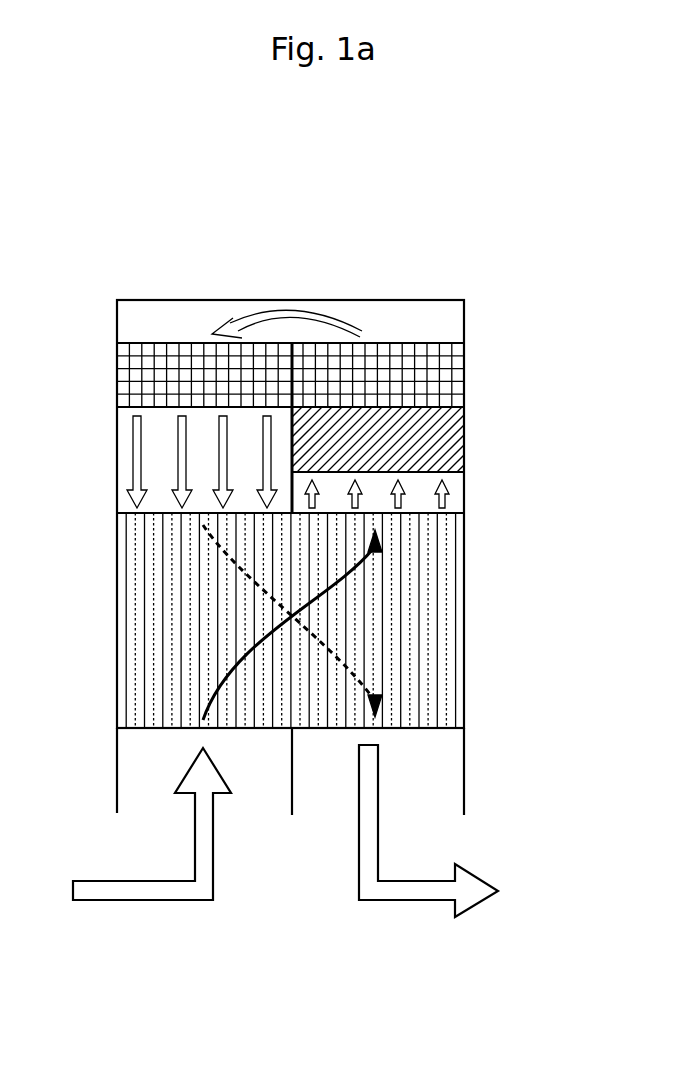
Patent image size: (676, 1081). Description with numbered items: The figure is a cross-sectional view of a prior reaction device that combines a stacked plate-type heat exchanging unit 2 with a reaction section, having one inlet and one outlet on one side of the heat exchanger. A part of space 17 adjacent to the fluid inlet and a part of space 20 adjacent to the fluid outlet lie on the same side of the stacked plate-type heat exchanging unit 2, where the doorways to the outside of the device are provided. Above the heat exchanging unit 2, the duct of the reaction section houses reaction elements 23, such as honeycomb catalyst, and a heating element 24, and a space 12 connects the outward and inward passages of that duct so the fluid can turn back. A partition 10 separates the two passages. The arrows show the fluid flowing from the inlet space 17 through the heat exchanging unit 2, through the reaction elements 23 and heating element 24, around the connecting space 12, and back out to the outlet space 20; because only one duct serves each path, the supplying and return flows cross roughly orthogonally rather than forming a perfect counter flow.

The stacked plate-type heat exchanging unit 2 is at (92, 515).
The partition 10 is at (291, 343).
The space for connecting the outward and inward passages 12 is at (486, 300).
The space adjacent to the inlet 17 is at (160, 772).
The space adjacent to the outlet 20 is at (420, 772).
The reaction elements 23 is at (203, 390).
The heating element 24 is at (385, 442).